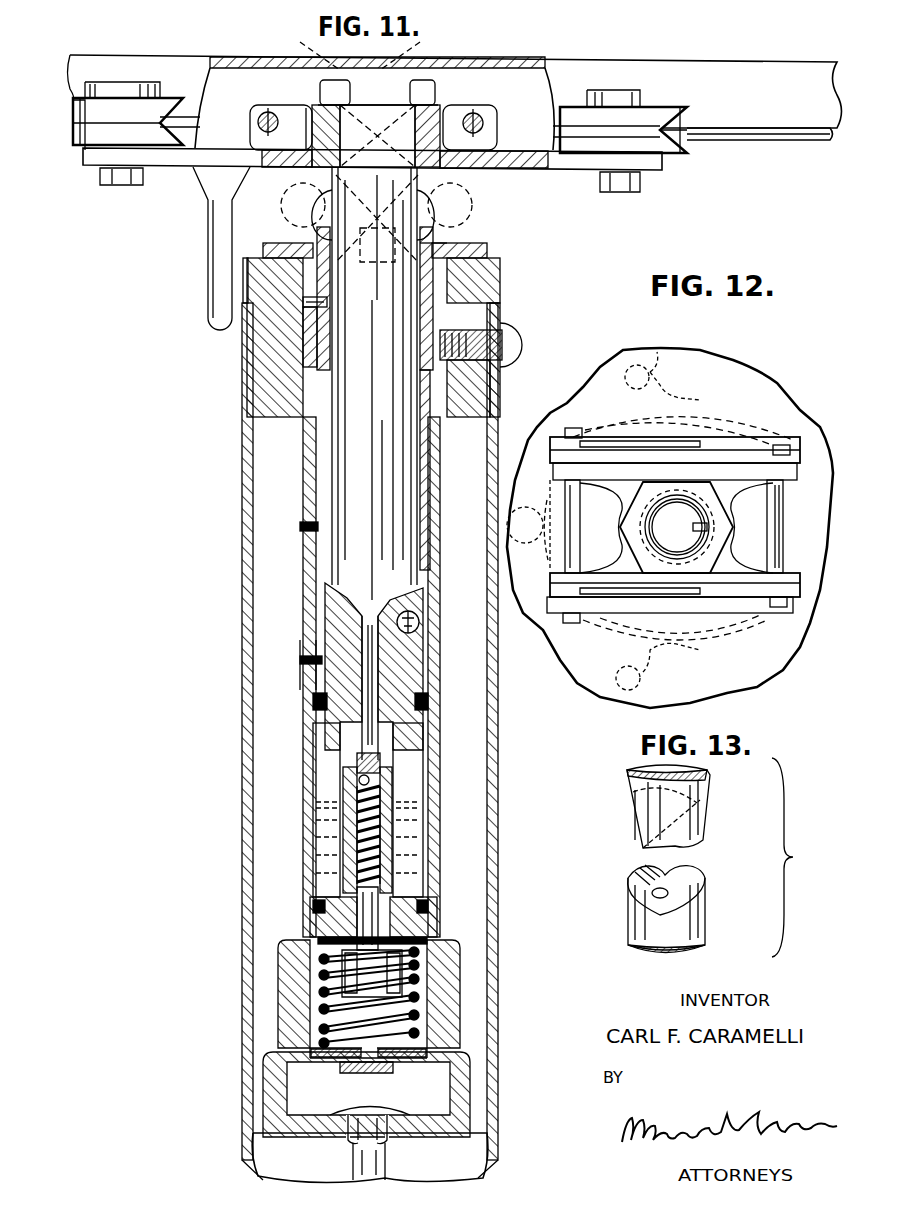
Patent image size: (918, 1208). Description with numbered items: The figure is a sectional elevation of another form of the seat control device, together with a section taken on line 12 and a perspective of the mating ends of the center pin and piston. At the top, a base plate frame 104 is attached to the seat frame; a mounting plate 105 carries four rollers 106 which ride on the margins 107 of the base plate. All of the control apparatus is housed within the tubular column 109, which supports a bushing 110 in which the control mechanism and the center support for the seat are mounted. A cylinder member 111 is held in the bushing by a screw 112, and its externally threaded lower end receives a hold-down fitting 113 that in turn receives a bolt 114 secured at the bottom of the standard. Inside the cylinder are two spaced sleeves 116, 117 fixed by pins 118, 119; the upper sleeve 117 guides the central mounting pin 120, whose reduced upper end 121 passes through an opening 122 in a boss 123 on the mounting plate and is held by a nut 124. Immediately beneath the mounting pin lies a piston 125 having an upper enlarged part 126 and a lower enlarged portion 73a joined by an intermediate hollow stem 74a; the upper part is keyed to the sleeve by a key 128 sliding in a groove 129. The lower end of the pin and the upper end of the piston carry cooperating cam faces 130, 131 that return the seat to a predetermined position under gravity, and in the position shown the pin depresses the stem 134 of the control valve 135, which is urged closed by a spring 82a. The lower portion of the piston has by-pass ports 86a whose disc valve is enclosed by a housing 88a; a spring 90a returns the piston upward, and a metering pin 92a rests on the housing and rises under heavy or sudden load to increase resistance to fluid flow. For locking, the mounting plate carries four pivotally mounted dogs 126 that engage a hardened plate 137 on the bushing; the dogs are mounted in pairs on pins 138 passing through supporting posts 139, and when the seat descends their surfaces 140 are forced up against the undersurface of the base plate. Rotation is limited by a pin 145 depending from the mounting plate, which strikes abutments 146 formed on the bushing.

In FIG. 11, the section line 12 is at (229, 57).
In FIG. 11, the base plate frame 104 is at (757, 62).
In FIG. 11, the mounting plate 105 is at (570, 174).
In FIG. 12, the mounting plate 105 is at (698, 368).
In FIG. 11, the rollers 106 is at (130, 95).
In FIG. 11, the margins 107 is at (787, 140).
In FIG. 11, the column 109 is at (242, 490).
In FIG. 11, the bushing 110 is at (500, 270).
In FIG. 11, the cylinder member 111 is at (305, 670).
In FIG. 11, the screw 112 is at (508, 338).
In FIG. 11, the hold-down fitting 113 is at (452, 988).
In FIG. 11, the bolt 114 is at (375, 1162).
In FIG. 11, the sleeve 116 is at (318, 590).
In FIG. 11, the upper sleeve 117 is at (318, 332).
In FIG. 11, the pin 118 is at (300, 527).
In FIG. 11, the pin 119 is at (303, 302).
In FIG. 11, the central mounting pin 120 is at (352, 437).
In FIG. 13, the central mounting pin 120 is at (710, 783).
In FIG. 11, the reduced upper end 121 is at (305, 176).
In FIG. 12, the reduced upper end 121 is at (678, 527).
In FIG. 11, the opening 122 is at (298, 129).
In FIG. 11, the boss 123 is at (440, 106).
In FIG. 12, the boss 123 is at (625, 497).
In FIG. 11, the nut 124 is at (342, 95).
In FIG. 12, the nut 124 is at (643, 543).
In FIG. 11, the piston 125 is at (338, 740).
In FIG. 13, the piston 125 is at (708, 922).
In FIG. 11, the upper part of piston / dogs 126 is at (312, 213).
In FIG. 12, the upper part of piston / dogs 126 is at (633, 448).
In FIG. 11, the key 128 is at (412, 624).
In FIG. 11, the groove 129 is at (422, 552).
In FIG. 11, the cam face 130 is at (420, 590).
In FIG. 13, the cam face 130 is at (688, 838).
In FIG. 11, the cam face 131 is at (345, 575).
In FIG. 13, the cam face 131 is at (688, 885).
In FIG. 11, the stem 134 is at (394, 735).
In FIG. 11, the control valve 135 is at (370, 778).
In FIG. 11, the hardened plate 137 is at (448, 246).
In FIG. 11, the pins 138 is at (258, 120).
In FIG. 12, the pins 138 is at (567, 493).
In FIG. 12, the supporting posts 139 is at (830, 447).
In FIG. 11, the surfaces 140 is at (366, 43).
In FIG. 11, the pin 145 is at (220, 232).
In FIG. 12, the pin 145 is at (534, 539).
In FIG. 11, the abutments 146 is at (377, 221).
In FIG. 12, the abutments 146 is at (658, 352).
In FIG. 11, the hollow stem 74a is at (382, 818).
In FIG. 11, the spring 82a is at (340, 823).
In FIG. 11, the by-pass ports 86a is at (392, 896).
In FIG. 11, the enlarged portion 73a is at (420, 905).
In FIG. 11, the housing 88a is at (425, 950).
In FIG. 11, the spring 90a is at (414, 1018).
In FIG. 11, the metering pin 92a is at (365, 966).